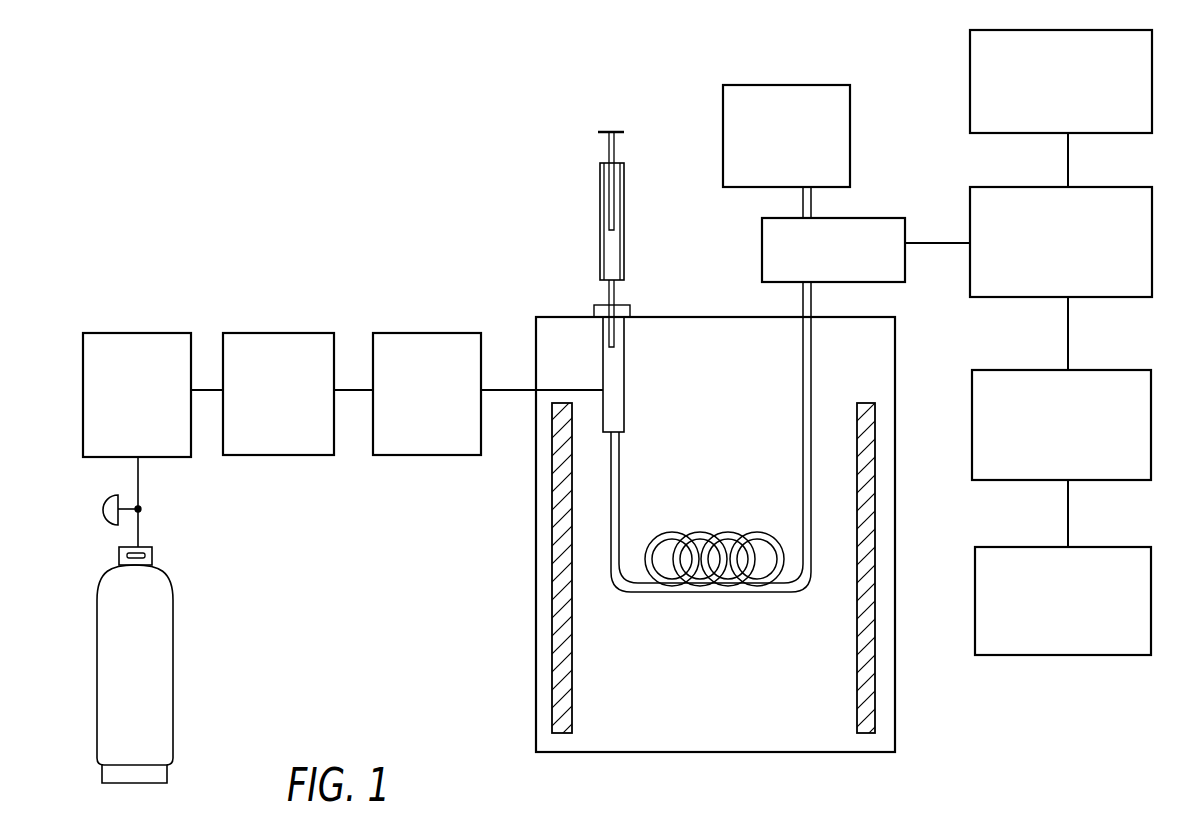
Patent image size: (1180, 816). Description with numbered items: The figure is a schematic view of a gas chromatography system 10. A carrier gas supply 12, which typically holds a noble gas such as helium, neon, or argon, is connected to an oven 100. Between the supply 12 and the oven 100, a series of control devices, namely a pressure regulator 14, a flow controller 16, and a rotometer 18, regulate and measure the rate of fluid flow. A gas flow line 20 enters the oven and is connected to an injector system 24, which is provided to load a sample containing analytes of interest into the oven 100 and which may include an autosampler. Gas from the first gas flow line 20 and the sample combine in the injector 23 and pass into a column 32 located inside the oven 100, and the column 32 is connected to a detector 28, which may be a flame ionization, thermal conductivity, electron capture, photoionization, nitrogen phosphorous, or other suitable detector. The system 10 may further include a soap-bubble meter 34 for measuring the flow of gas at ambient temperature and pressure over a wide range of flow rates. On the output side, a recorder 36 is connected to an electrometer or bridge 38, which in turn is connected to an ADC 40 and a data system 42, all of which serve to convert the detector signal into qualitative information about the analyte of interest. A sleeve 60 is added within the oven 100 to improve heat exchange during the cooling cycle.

The gas chromatography system 10 is at (725, 754).
The carrier gas supply 12 is at (173, 659).
The pressure regulator 14 is at (137, 333).
The flow controller 16 is at (278, 333).
The rotometer 18 is at (426, 333).
The gas flow line 20 is at (138, 485).
The injector 23 is at (624, 405).
The injector system 24 is at (600, 163).
The detector 28 is at (762, 245).
The column 32 is at (700, 532).
The soap-bubble meter 34 is at (808, 85).
The recorder 36 is at (972, 38).
The electrometer or bridge 38 is at (970, 215).
The ADC 40 is at (972, 400).
The data system 42 is at (975, 628).
The sleeve 60 is at (552, 505).
The oven 100 is at (536, 677).